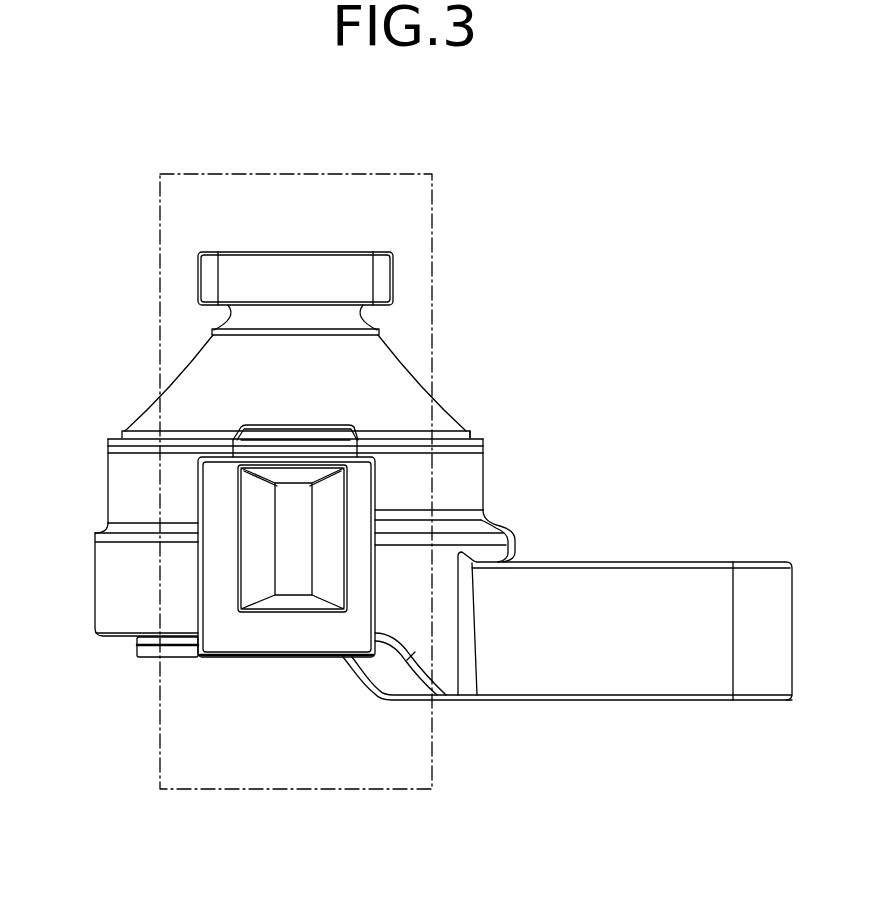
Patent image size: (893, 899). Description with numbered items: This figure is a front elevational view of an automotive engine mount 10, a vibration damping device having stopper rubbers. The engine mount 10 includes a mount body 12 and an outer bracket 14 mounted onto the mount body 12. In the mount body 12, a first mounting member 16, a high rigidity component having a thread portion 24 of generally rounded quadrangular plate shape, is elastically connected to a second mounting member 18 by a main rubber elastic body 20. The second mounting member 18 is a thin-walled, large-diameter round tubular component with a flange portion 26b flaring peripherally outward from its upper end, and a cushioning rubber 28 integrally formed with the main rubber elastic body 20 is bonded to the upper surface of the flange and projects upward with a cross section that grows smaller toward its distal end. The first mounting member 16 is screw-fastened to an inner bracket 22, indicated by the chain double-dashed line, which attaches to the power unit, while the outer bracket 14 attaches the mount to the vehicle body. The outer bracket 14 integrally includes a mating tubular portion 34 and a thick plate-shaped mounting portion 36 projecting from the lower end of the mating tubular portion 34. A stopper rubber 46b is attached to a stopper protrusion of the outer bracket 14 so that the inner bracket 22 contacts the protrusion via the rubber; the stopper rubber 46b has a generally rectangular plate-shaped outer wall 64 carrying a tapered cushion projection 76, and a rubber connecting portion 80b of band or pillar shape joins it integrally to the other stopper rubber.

The engine mount 10 is at (570, 370).
The mount body 12 is at (419, 378).
The outer bracket 14 is at (485, 705).
The first mounting member 16 is at (294, 318).
The second mounting member 18 is at (113, 435).
The main rubber elastic body 20 is at (210, 400).
The inner bracket 22 is at (190, 200).
The thread portion 24 is at (232, 285).
The flange portion 26b is at (270, 447).
The cushioning rubber 28 is at (307, 433).
The mating tubular portion 34 is at (115, 573).
The mounting portion 36 is at (622, 672).
The stopper rubber 46b is at (191, 502).
The outer wall 64 is at (217, 592).
The cushion projection 76 is at (295, 518).
The rubber connecting portion 80b is at (178, 652).